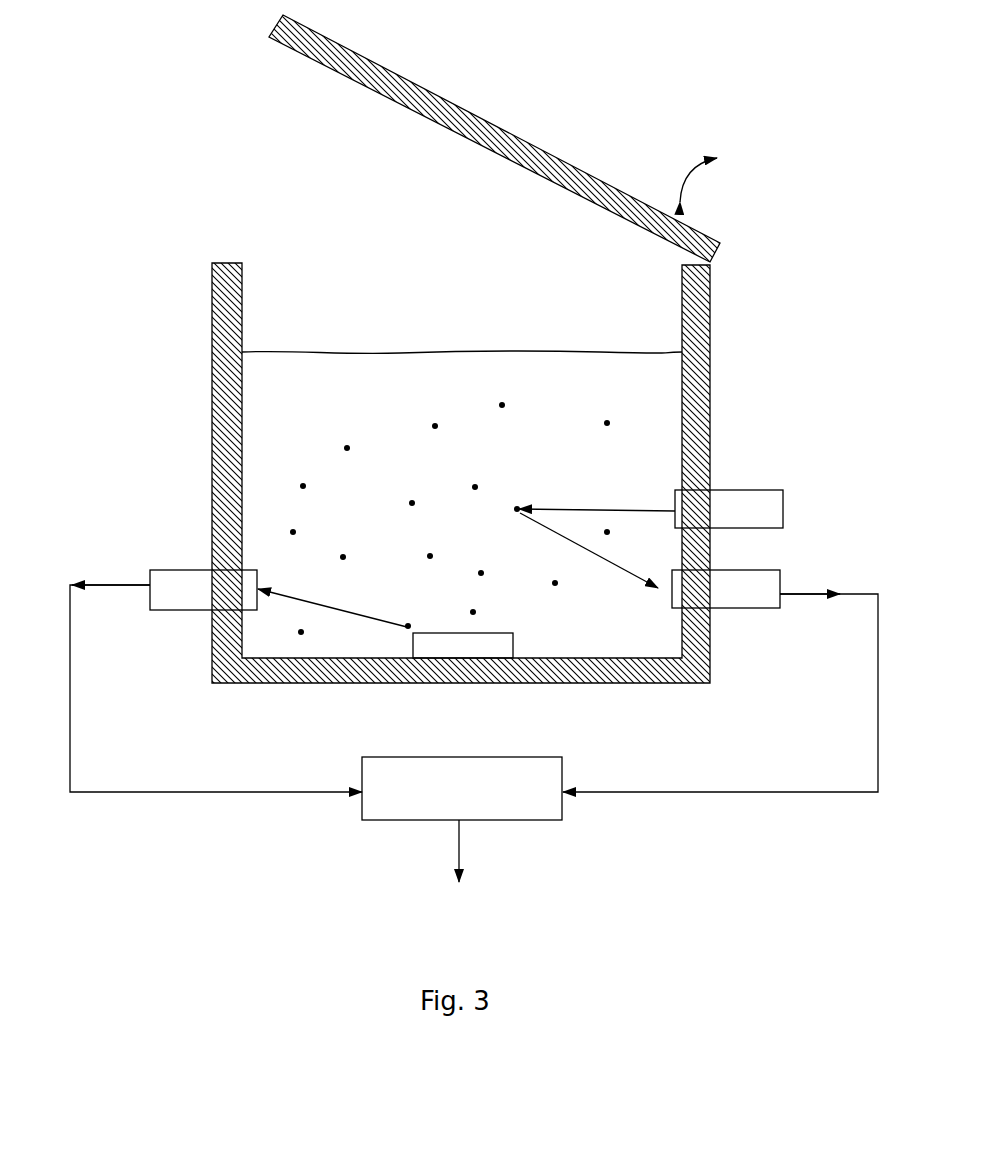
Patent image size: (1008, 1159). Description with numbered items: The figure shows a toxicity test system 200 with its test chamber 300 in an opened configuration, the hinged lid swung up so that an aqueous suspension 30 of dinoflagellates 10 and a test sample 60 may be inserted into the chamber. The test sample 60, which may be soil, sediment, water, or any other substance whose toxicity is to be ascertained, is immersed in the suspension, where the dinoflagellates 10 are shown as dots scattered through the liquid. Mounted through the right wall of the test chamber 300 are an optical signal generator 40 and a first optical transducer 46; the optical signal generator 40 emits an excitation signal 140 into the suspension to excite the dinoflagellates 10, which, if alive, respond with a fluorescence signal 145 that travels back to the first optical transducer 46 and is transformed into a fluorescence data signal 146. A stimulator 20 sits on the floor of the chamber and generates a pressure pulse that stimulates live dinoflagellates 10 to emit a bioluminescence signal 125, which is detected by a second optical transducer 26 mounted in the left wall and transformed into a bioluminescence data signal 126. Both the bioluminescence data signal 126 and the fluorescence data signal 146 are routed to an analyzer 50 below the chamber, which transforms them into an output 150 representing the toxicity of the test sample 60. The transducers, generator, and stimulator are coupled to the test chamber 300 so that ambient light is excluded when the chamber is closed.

The toxicity test system 200 is at (193, 213).
The test chamber 300 is at (710, 325).
The aqueous suspension 30 is at (293, 372).
The dinoflagellates 10 is at (293, 532).
The test sample 60 is at (290, 417).
The stimulator 20 is at (448, 652).
The second optical transducer 26 is at (188, 570).
The bioluminescence signal 125 is at (347, 612).
The bioluminescence data signal 126 is at (70, 702).
The optical signal generator 40 is at (775, 488).
The excitation signal 140 is at (607, 513).
The first optical transducer 46 is at (770, 570).
The fluorescence signal 145 is at (618, 569).
The fluorescence data signal 146 is at (878, 740).
The analyzer 50 is at (378, 820).
The output 150 is at (460, 851).